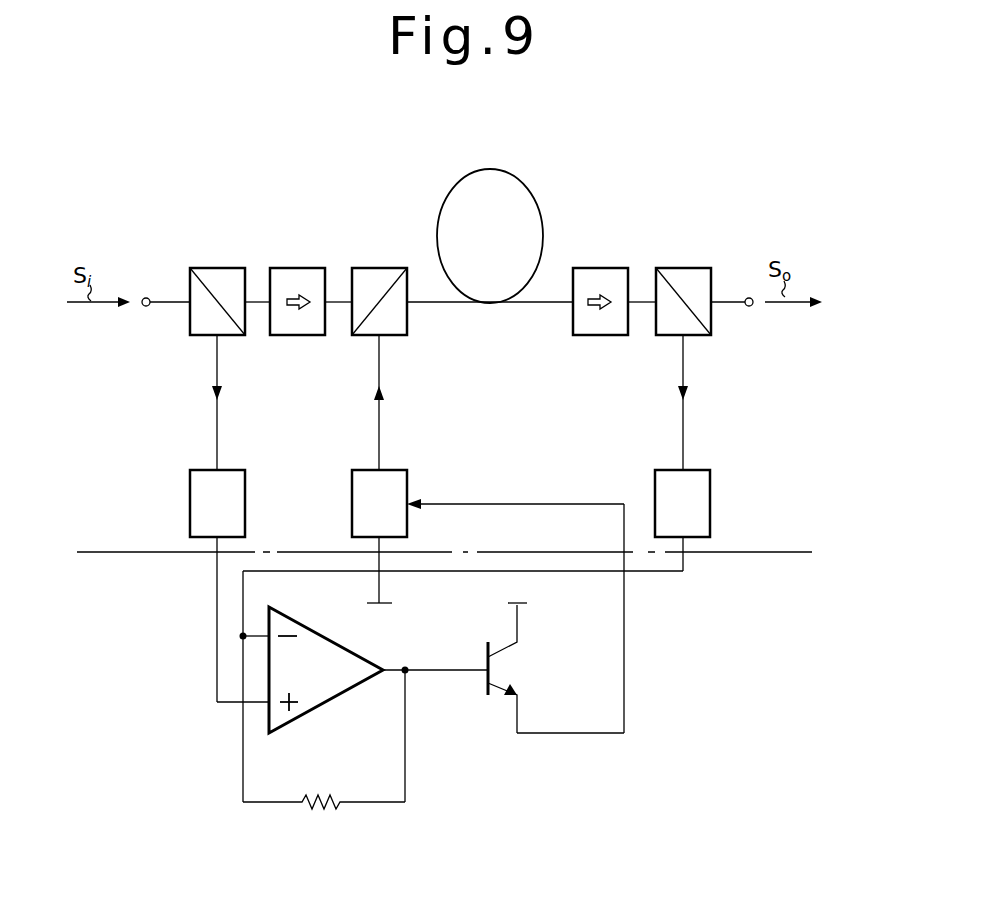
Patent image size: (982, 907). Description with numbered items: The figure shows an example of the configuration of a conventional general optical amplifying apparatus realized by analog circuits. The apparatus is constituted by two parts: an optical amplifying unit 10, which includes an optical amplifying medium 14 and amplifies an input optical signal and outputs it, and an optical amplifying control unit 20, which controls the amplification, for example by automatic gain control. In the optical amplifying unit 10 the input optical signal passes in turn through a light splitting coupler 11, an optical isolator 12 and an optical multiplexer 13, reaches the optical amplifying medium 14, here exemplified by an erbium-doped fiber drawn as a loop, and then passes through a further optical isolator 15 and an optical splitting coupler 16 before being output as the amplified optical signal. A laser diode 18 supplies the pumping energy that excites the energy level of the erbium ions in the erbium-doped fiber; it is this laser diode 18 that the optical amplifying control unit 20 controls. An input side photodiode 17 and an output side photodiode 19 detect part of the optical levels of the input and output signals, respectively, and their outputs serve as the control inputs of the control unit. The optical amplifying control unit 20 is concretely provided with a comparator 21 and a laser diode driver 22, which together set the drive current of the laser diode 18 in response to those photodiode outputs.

The optical amplifying unit 10 is at (718, 398).
The light splitting coupler 11 is at (232, 268).
The optical isolator 12 is at (312, 268).
The optical multiplexer (WDM) 13 is at (395, 268).
The optical amplifying medium 14 is at (538, 203).
The optical isolator 15 is at (611, 268).
The optical splitting coupler 16 is at (697, 268).
The input side photodiode 17 is at (233, 468).
The laser diode 18 is at (398, 468).
The output side photodiode 19 is at (700, 468).
The optical amplifying control unit 20 is at (505, 654).
The comparator 21 is at (315, 623).
The laser diode driver 22 is at (517, 673).